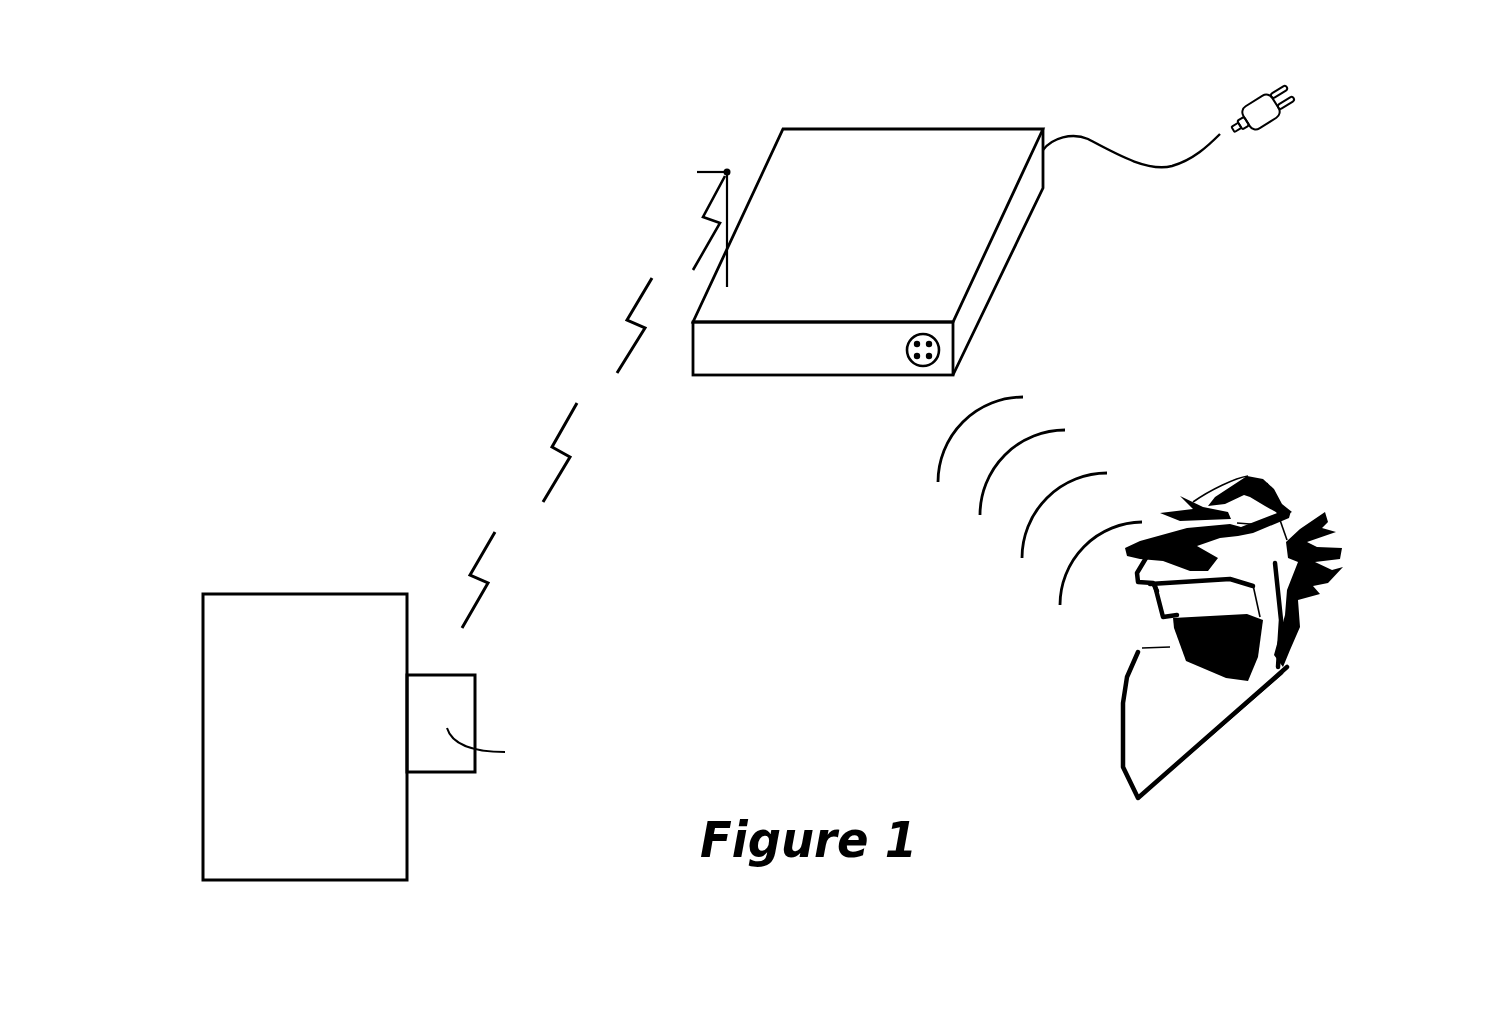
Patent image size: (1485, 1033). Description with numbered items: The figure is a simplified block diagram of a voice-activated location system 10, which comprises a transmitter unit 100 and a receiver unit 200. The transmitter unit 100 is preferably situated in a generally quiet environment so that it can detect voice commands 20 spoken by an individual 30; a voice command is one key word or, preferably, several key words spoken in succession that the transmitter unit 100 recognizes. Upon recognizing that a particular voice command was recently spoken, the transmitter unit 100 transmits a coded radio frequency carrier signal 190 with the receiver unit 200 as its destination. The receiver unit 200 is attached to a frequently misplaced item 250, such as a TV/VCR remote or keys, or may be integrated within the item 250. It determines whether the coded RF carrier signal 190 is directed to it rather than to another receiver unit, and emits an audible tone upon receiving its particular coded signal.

The voice-activated location system 10 is at (521, 356).
The transmitter unit 100 is at (853, 128).
The coded radio frequency carrier signal 190 is at (597, 470).
The receiver unit 200 is at (437, 772).
The misplaced item 250 is at (307, 594).
The voice commands 20 is at (1111, 434).
The individual 30 is at (1338, 689).